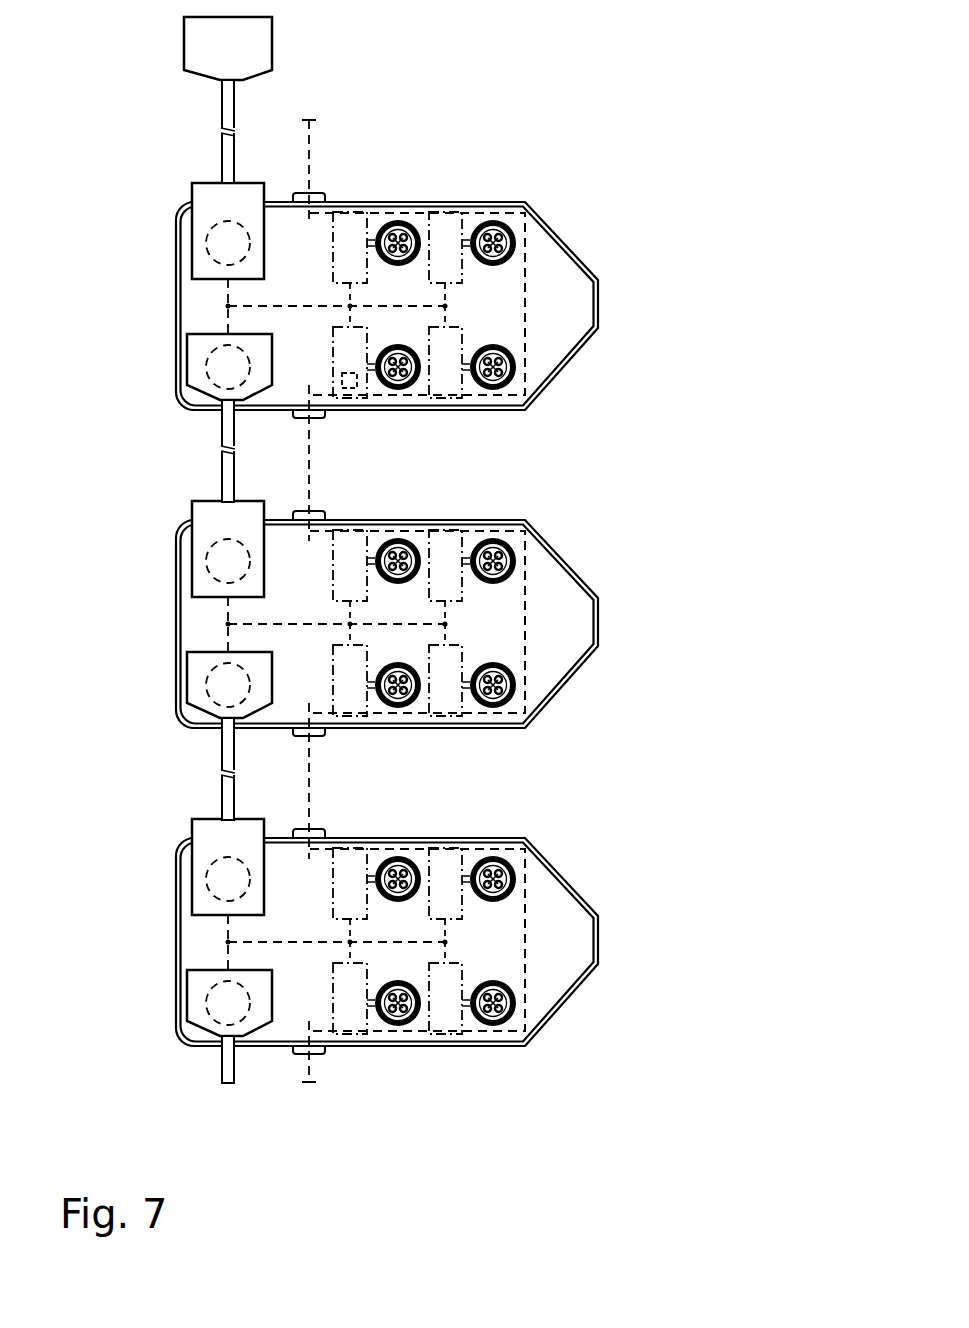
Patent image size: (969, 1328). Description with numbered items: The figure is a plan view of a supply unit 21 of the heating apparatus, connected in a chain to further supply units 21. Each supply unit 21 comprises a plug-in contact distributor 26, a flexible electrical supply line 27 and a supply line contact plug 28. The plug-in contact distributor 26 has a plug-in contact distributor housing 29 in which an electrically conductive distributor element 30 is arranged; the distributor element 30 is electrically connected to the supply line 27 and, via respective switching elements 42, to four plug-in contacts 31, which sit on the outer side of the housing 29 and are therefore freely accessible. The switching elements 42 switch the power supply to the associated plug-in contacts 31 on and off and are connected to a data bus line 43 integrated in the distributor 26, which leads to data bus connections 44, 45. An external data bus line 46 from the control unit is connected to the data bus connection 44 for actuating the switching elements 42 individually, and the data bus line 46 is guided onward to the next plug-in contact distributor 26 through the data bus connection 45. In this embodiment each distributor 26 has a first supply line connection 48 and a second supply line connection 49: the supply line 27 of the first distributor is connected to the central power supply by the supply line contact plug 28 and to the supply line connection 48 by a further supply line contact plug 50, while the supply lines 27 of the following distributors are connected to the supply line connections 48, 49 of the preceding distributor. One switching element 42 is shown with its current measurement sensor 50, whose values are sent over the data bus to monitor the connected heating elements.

The supply unit 21 is at (386, 586).
The plug-in contact distributor 26 is at (601, 262).
The electrical supply line 27 is at (228, 146).
The supply line contact plug 28 is at (190, 60).
The plug-in contact distributor housing 29 is at (583, 327).
The distributor element 30 is at (277, 305).
The plug-in contacts 31 is at (408, 225).
The switching elements 42 is at (358, 598).
The data bus line 43 is at (527, 300).
The data bus connection 44 is at (325, 516).
The data bus connection 45 is at (325, 733).
The data bus line 46 is at (312, 145).
The first supply line connection 48 is at (217, 253).
The second supply line connection 49 is at (218, 382).
The further supply line contact plug / current measurement sensor 50 is at (200, 215).